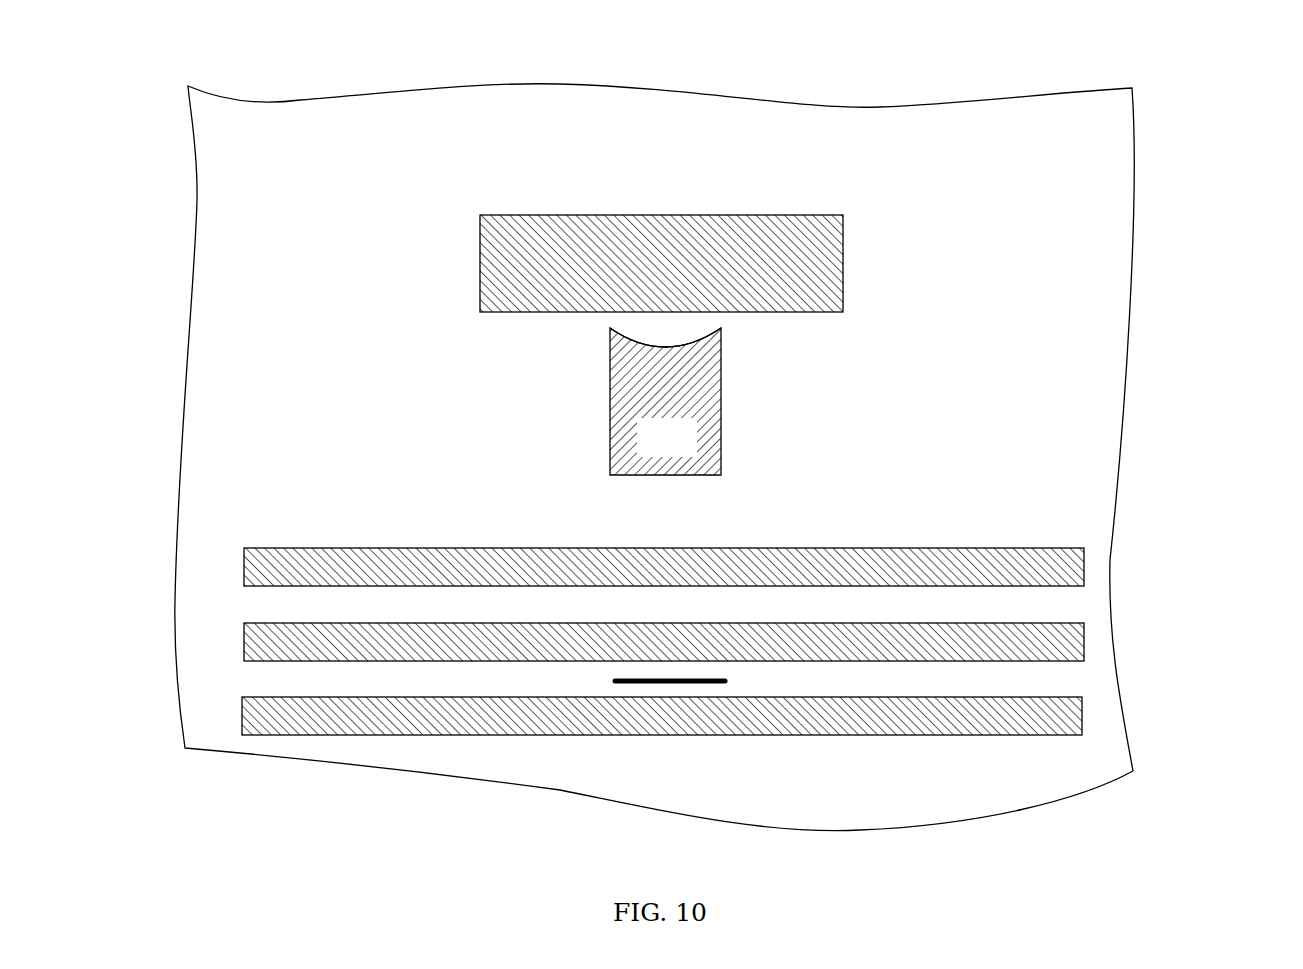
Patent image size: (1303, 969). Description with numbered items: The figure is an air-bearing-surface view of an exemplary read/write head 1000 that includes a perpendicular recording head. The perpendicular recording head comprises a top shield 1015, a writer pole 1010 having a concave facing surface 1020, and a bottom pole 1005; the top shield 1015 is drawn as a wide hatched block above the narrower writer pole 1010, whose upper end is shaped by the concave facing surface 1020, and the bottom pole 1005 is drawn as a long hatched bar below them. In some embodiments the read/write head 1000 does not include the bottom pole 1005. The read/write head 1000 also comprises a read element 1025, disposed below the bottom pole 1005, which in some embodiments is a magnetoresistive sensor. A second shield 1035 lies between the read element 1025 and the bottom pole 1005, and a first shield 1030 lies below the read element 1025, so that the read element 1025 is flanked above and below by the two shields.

The read/write head 1000 is at (1068, 92).
The bottom pole 1005 is at (244, 568).
The writer pole 1010 is at (665, 401).
The top shield 1015 is at (593, 215).
The concave facing surface 1020 is at (650, 347).
The read element 1025 is at (702, 683).
The first shield 1030 is at (1084, 717).
The second shield 1035 is at (1084, 645).